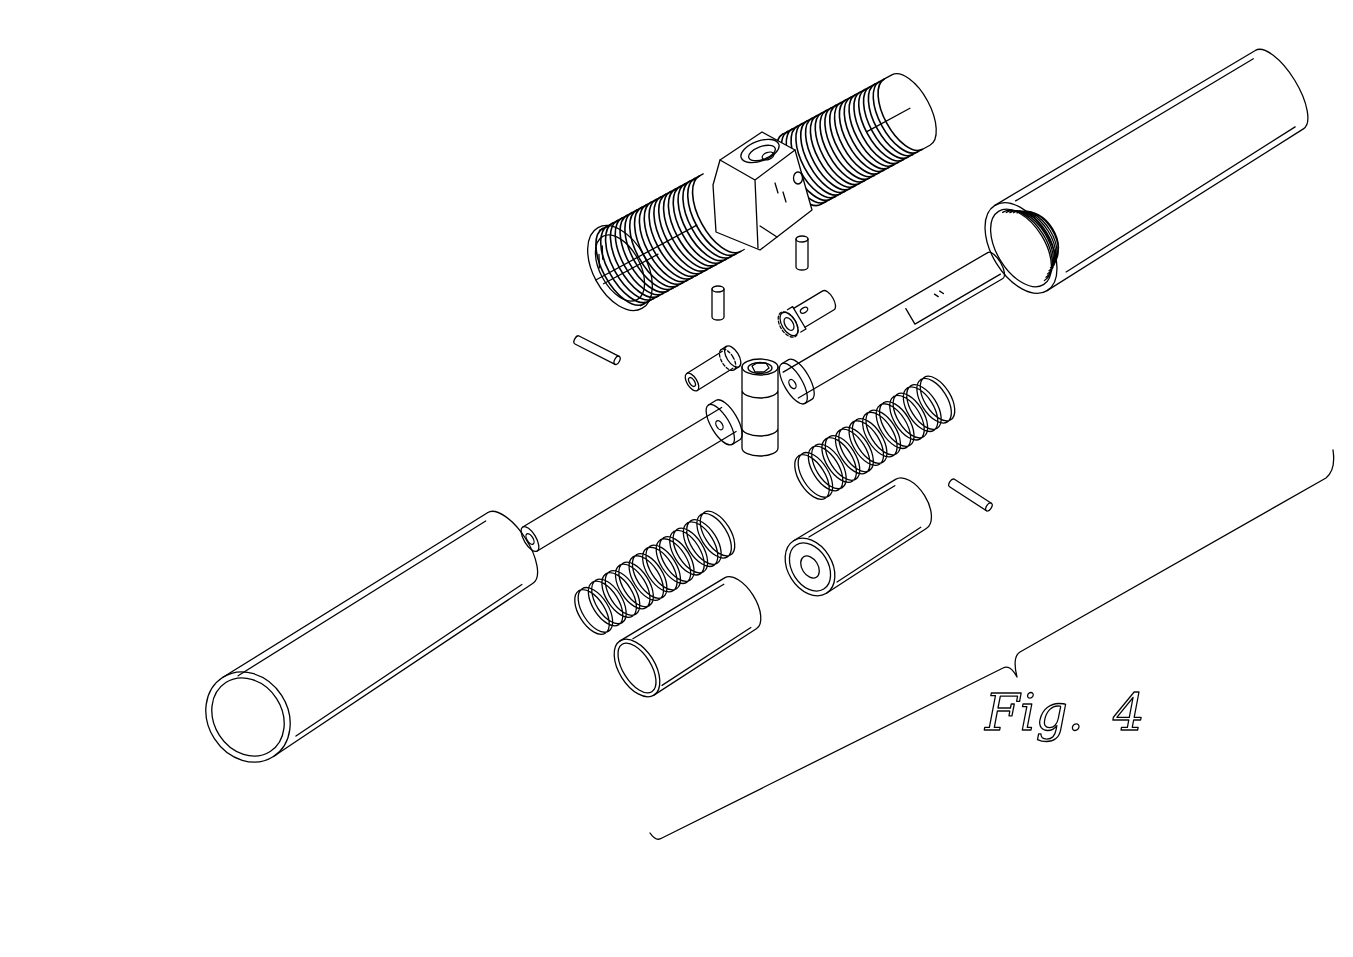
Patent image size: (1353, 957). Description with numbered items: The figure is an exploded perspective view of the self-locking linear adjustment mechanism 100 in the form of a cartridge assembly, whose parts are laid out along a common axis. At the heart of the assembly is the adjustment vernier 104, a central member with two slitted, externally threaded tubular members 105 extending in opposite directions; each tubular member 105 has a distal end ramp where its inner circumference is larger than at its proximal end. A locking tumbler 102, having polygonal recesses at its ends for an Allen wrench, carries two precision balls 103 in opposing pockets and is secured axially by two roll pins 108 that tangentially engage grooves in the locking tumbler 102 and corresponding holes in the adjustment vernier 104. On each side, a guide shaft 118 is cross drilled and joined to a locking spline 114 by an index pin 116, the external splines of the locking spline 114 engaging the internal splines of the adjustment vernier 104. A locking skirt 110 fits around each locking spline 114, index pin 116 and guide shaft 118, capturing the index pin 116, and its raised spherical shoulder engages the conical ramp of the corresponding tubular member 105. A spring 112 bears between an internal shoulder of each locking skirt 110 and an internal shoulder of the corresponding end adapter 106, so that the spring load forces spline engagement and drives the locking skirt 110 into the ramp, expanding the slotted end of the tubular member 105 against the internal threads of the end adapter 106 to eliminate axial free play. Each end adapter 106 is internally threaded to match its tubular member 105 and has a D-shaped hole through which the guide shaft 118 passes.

The self-locking linear adjustment mechanism 100 is at (303, 146).
The locking tumbler 102 is at (760, 355).
The precision balls 103 is at (806, 410).
The adjustment vernier 104 is at (722, 160).
The tubular member 105 is at (822, 112).
The end adapter 106 is at (1178, 215).
The roll pin 108 is at (575, 342).
The locking skirt 110 is at (870, 570).
The spring 112 is at (960, 400).
The locking spline 114 is at (830, 302).
The index pin 116 is at (825, 238).
The guide shaft 118 is at (985, 290).